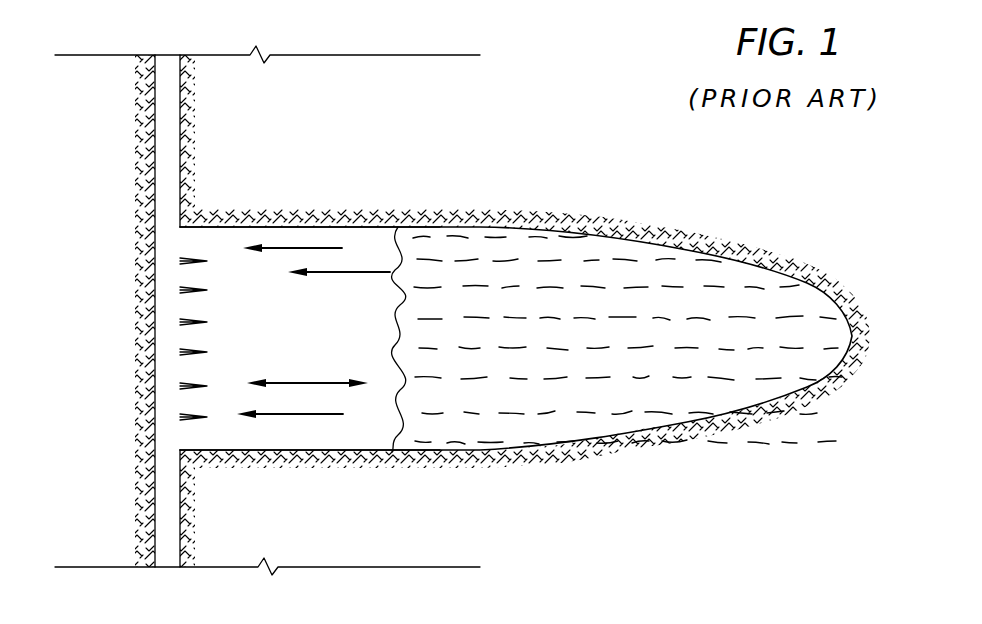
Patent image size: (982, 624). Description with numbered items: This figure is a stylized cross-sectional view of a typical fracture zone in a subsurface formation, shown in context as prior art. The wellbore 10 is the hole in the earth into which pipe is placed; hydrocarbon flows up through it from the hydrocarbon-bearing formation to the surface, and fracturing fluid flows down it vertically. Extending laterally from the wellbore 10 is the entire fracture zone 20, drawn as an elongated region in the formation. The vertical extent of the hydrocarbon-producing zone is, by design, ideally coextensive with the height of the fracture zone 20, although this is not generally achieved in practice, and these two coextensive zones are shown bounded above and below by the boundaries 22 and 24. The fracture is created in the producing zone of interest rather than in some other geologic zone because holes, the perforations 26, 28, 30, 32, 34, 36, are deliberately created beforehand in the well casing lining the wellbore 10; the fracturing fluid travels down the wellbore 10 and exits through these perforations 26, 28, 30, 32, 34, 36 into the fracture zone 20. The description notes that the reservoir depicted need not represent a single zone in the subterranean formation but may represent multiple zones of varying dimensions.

The wellbore 10 is at (155, 165).
The fracture zone 20 is at (497, 227).
The upper boundary of the producing and fracture zones 22 is at (180, 227).
The lower boundary of the producing and fracture zones 24 is at (180, 450).
The perforation 26 is at (180, 262).
The perforation 28 is at (180, 291).
The perforation 30 is at (180, 322).
The perforation 32 is at (180, 352).
The perforation 34 is at (180, 386).
The perforation 36 is at (180, 417).